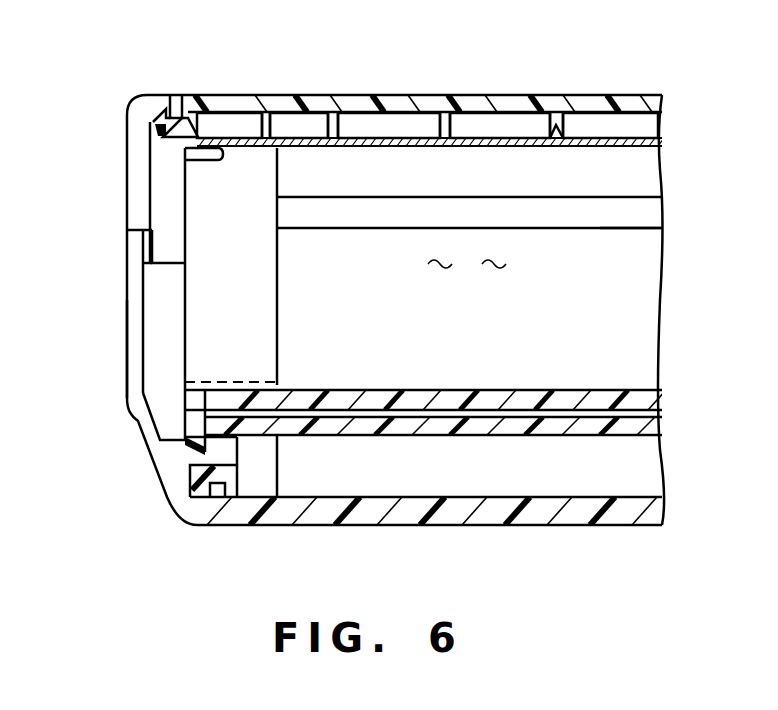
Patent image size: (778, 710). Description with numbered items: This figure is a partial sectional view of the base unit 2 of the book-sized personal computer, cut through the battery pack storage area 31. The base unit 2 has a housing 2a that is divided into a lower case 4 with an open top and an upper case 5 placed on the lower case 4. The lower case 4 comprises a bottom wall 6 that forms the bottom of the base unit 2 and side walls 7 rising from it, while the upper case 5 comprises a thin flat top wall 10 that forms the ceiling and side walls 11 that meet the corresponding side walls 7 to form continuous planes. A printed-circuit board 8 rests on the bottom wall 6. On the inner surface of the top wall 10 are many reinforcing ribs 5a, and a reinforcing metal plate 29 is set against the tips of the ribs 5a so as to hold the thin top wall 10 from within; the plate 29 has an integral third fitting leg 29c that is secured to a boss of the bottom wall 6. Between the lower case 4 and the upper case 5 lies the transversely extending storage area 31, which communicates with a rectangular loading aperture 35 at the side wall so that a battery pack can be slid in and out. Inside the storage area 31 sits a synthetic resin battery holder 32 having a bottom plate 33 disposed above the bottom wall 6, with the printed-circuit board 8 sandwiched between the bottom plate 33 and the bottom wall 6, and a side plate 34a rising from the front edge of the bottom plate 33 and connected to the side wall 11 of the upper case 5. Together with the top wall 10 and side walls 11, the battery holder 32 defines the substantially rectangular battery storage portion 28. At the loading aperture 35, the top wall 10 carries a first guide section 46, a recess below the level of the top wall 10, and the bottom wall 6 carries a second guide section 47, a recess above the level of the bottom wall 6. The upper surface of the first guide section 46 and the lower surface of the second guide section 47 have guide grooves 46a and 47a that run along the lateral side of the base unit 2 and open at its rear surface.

The base unit 2 is at (666, 80).
The housing 2a is at (594, 94).
The lower case 4 is at (170, 459).
The upper case 5 is at (134, 212).
The reinforcing ribs 5a is at (440, 118).
The bottom wall 6 is at (572, 512).
The side walls 7 is at (124, 351).
The printed-circuit board 8 is at (627, 425).
The top wall 10 is at (438, 94).
The side walls 11 is at (134, 178).
The battery storage portion 28 is at (640, 330).
The reinforcing metal plate 29 is at (612, 146).
The third fitting leg 29c is at (252, 322).
The storage area 31 is at (467, 264).
The battery holder 32 is at (446, 390).
The bottom plate 33 is at (603, 388).
The side plate 34a is at (656, 270).
The loading aperture 35 is at (157, 291).
The first guide section 46 is at (152, 121).
The guide groove 46a is at (173, 105).
The second guide section 47 is at (190, 499).
The guide groove 47a is at (215, 500).